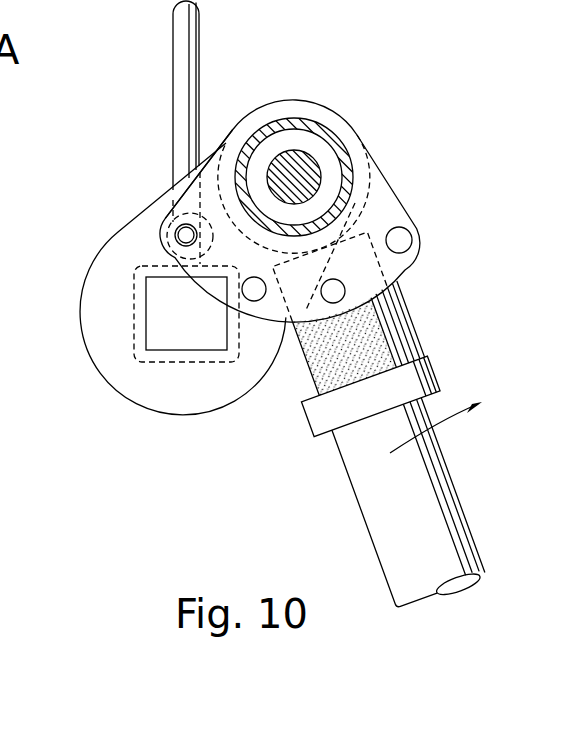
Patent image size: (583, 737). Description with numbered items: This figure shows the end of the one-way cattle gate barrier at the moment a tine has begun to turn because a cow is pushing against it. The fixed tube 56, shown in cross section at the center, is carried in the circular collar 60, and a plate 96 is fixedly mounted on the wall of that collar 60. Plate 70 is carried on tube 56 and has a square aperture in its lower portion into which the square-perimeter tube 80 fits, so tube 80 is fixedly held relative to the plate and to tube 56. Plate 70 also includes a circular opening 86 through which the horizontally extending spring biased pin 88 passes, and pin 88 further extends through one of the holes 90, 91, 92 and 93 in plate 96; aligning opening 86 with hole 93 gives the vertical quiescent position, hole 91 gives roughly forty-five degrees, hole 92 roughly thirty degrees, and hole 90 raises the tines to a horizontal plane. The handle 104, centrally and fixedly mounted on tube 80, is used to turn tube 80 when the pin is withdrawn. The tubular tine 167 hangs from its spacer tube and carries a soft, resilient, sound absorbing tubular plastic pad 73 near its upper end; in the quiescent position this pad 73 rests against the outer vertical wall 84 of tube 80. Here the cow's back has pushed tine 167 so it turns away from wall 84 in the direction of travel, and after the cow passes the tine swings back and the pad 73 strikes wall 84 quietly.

The handle 104 is at (188, 45).
The tube 56 is at (295, 165).
The circular collar 60 is at (344, 157).
The plate 96 is at (380, 202).
The hole 90 is at (402, 239).
The circular opening 86 is at (175, 237).
The hole 93 is at (180, 252).
The spring biased pin 88 is at (178, 213).
The plate 70 is at (103, 295).
The tube 80 is at (130, 321).
The outer vertical wall 84 is at (238, 331).
The hole 92 is at (256, 295).
The hole 91 is at (336, 293).
The tubular plastic pad 73 is at (378, 313).
The tubular tine 167 is at (423, 497).